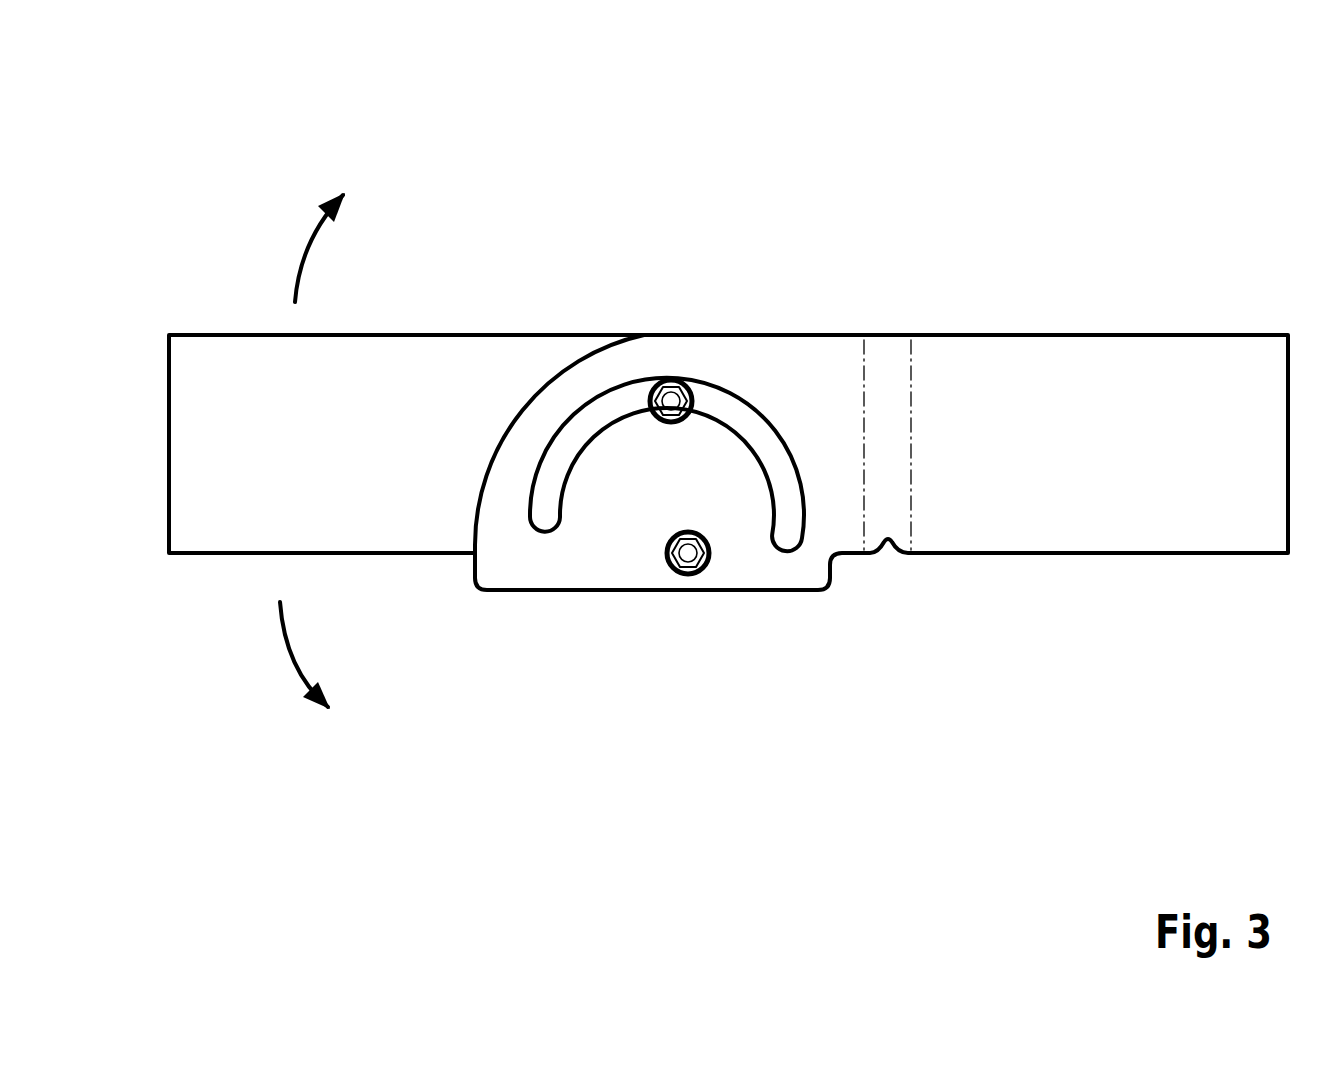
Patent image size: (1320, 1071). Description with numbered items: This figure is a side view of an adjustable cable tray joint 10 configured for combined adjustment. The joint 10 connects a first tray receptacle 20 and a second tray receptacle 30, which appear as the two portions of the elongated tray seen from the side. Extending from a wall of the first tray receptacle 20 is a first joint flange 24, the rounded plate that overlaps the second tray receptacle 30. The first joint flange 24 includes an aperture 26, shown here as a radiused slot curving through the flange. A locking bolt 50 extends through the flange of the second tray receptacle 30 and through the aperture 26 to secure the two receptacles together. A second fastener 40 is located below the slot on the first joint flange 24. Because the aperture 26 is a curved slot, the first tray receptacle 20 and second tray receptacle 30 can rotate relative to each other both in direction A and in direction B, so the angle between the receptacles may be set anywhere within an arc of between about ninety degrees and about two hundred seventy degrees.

The adjustable cable tray joint 10 is at (243, 147).
The first tray receptacle 20 is at (1082, 553).
The second tray receptacle 30 is at (201, 555).
The first joint flange 24 is at (625, 566).
The aperture 26 is at (545, 520).
The pivot fastener 40 is at (689, 570).
The locking bolt 50 is at (673, 397).